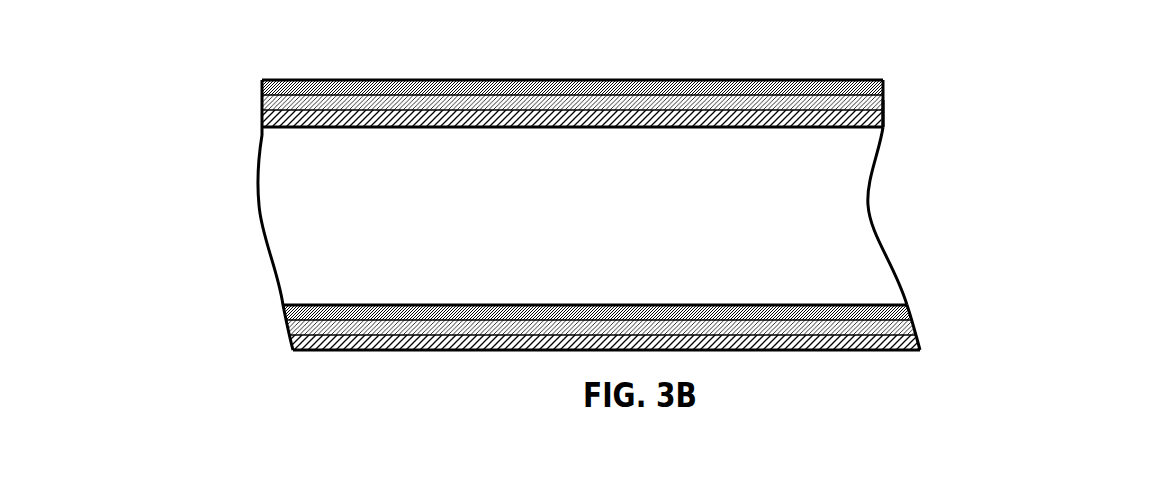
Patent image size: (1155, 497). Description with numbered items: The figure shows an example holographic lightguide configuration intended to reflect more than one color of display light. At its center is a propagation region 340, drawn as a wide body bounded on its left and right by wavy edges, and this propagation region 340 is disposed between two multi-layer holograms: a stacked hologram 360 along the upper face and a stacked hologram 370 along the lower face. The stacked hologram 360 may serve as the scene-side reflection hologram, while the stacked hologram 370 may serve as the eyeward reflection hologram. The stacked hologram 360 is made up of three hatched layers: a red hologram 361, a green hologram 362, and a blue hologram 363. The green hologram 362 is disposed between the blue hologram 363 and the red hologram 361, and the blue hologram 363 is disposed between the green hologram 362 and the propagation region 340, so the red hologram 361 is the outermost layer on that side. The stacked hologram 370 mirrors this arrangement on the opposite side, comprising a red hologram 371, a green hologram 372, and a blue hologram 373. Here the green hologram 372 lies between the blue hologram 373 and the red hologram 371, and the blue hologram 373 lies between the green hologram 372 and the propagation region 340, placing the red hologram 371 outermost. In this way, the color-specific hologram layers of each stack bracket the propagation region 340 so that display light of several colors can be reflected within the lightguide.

The propagation region 340 is at (593, 236).
The stacked hologram 360 is at (603, 91).
The red hologram 361 is at (884, 84).
The green hologram 362 is at (882, 103).
The blue hologram 363 is at (877, 118).
The stacked hologram 370 is at (641, 355).
The red hologram 371 is at (905, 342).
The green hologram 372 is at (905, 328).
The blue hologram 373 is at (910, 313).